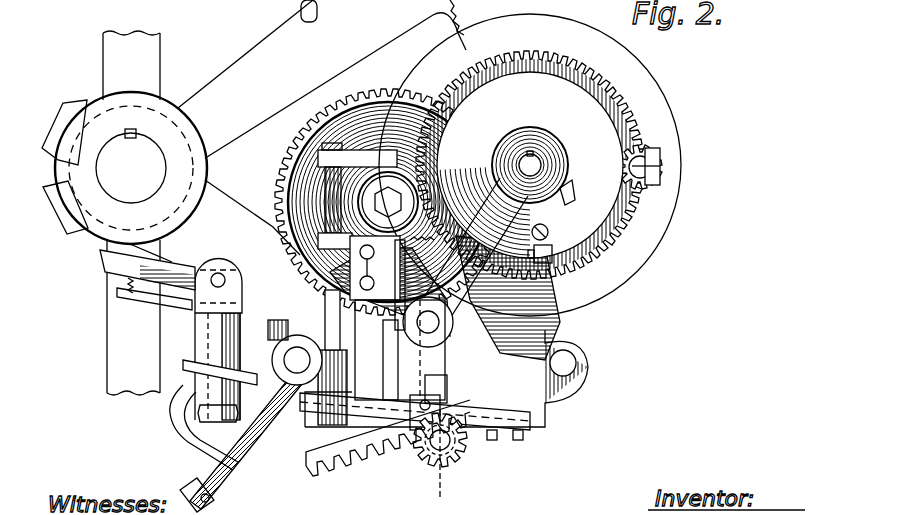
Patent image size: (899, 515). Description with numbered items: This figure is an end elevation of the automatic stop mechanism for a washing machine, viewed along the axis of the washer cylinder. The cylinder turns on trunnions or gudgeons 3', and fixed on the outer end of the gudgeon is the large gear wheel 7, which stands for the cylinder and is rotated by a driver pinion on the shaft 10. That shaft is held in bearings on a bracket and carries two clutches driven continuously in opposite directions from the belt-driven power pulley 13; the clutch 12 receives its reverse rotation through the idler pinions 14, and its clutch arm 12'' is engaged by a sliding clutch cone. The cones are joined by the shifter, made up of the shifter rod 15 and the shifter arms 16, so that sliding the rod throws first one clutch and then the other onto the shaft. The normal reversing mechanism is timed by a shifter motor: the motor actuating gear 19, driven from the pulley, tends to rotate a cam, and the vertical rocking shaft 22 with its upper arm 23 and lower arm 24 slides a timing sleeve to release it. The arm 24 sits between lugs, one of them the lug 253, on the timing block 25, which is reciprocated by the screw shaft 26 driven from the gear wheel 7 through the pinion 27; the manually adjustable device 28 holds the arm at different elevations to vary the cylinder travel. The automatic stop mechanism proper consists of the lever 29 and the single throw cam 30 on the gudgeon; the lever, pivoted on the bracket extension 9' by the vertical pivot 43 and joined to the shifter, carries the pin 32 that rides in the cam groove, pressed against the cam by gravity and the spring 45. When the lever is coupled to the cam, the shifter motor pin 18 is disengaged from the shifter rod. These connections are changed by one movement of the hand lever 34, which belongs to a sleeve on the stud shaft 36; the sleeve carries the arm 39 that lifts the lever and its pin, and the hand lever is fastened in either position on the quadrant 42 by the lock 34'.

The trunnions or gudgeons 3' is at (131, 166).
The large gear wheel 7 is at (322, 78).
The bracket extension 9' is at (413, 419).
The shaft 10 is at (535, 152).
The clutch 12 is at (530, 148).
The clutch arm 12'' is at (568, 202).
The power pulley 13 is at (564, 30).
The idler pinions 14 is at (648, 132).
The shifter rod 15 is at (436, 323).
The shifter arms 16 is at (471, 254).
The shifter motor pin 18 is at (397, 318).
The motor actuating gear 19 is at (301, 150).
The vertical rocking shaft 22 is at (296, 184).
The arm 23 is at (362, 148).
The arm 24 is at (405, 458).
The timing block 25 is at (445, 422).
The screw shaft 26 is at (456, 472).
The pinion 27 is at (452, 456).
The manually adjustable device 28 is at (295, 263).
The lever 29 is at (224, 260).
The single throw cam 30 is at (124, 168).
The pin 32 is at (128, 268).
The hand lever 34 is at (266, 254).
The lock 34' is at (178, 491).
The stud shaft 36 is at (303, 368).
The arm 39 is at (372, 310).
The quadrant 42 is at (170, 413).
The vertical pivot 43 is at (207, 338).
The spring 45 is at (130, 288).
The lug 253 is at (462, 395).